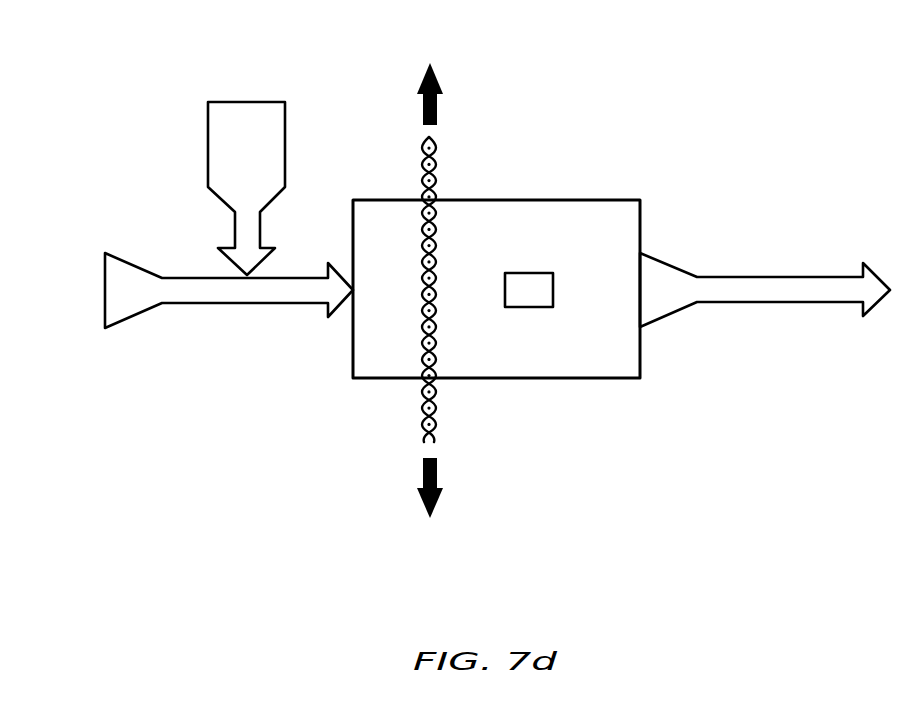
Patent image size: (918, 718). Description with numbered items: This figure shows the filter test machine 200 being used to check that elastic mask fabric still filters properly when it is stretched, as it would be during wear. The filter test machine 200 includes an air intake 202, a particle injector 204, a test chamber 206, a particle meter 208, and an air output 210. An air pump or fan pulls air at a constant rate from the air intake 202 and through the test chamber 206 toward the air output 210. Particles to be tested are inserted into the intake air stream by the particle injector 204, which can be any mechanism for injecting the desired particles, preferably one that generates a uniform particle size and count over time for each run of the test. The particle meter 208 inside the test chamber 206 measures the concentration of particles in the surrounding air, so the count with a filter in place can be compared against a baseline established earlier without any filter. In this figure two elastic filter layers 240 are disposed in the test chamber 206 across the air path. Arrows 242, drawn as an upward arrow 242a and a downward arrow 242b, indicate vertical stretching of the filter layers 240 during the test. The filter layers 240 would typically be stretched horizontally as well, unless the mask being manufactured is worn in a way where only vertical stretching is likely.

The filter test machine 200 is at (708, 169).
The air intake 202 is at (103, 291).
The particle injector 204 is at (260, 160).
The test chamber 206 is at (560, 200).
The particle meter 208 is at (530, 273).
The air output 210 is at (799, 282).
The filter layers 240 is at (423, 229).
The arrows 242 is at (437, 232).
The arrow 242a is at (437, 80).
The arrow 242b is at (440, 497).